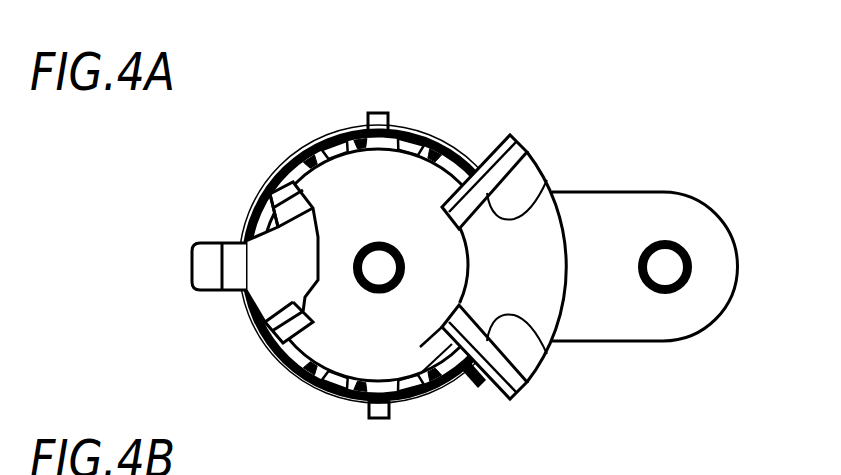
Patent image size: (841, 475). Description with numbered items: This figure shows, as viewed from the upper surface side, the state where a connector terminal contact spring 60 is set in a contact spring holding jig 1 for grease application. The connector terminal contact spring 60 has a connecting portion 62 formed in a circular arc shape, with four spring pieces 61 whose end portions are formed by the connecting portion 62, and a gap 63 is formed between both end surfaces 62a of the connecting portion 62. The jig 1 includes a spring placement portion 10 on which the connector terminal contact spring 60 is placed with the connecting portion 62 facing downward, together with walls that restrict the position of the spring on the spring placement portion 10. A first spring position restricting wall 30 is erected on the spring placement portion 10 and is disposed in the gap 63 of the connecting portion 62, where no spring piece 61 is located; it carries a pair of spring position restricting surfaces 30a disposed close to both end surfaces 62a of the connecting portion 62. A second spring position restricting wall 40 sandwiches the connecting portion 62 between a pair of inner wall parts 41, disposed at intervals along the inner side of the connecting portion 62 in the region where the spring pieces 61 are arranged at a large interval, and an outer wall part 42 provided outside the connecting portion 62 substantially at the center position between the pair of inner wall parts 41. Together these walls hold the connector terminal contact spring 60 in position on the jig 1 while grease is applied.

The contact spring holding jig for grease application 1 is at (549, 96).
The spring placement portion 10 is at (312, 186).
The first spring position restricting wall 30 is at (540, 160).
The spring position restricting surface 30a is at (486, 154).
The second spring position restricting wall 40 is at (225, 232).
The inner wall part 41 is at (313, 203).
The outer wall part 42 is at (207, 235).
The connector terminal contact spring 60 is at (372, 127).
The spring piece 61 is at (340, 134).
The connecting portion 62 is at (376, 418).
The end surface 62a is at (489, 213).
The gap 63 is at (487, 381).